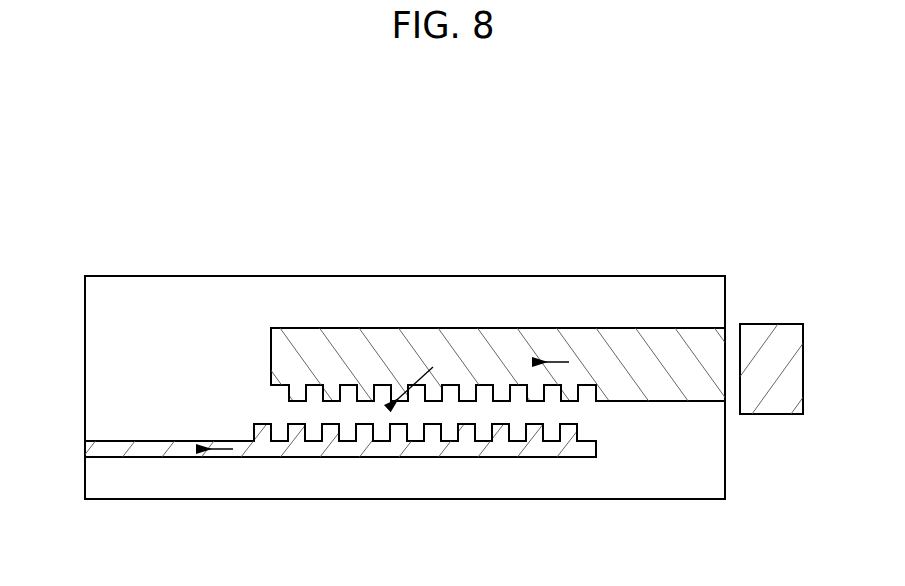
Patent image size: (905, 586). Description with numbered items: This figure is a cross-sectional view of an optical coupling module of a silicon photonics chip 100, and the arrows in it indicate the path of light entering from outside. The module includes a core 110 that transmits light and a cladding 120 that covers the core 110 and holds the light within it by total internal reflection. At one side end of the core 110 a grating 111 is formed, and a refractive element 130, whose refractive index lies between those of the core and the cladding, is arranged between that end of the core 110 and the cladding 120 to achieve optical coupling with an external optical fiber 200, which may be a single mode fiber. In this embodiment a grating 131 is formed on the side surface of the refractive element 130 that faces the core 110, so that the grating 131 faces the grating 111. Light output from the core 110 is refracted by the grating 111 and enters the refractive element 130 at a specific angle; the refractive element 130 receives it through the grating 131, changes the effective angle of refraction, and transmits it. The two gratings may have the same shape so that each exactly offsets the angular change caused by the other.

The silicon photonics chip 100 is at (464, 274).
The core 110 is at (137, 452).
The grating 111 is at (570, 432).
The cladding 120 is at (718, 462).
The refractive element 130 is at (625, 313).
The grating 131 is at (353, 392).
The optical fiber 200 is at (790, 368).